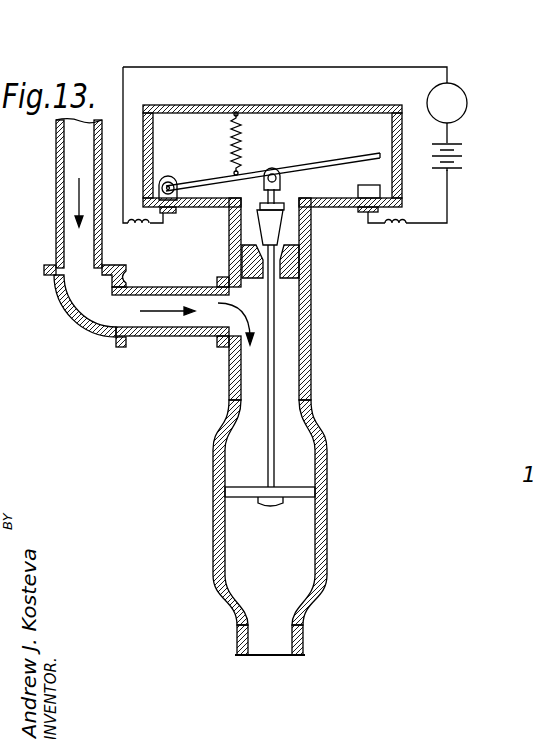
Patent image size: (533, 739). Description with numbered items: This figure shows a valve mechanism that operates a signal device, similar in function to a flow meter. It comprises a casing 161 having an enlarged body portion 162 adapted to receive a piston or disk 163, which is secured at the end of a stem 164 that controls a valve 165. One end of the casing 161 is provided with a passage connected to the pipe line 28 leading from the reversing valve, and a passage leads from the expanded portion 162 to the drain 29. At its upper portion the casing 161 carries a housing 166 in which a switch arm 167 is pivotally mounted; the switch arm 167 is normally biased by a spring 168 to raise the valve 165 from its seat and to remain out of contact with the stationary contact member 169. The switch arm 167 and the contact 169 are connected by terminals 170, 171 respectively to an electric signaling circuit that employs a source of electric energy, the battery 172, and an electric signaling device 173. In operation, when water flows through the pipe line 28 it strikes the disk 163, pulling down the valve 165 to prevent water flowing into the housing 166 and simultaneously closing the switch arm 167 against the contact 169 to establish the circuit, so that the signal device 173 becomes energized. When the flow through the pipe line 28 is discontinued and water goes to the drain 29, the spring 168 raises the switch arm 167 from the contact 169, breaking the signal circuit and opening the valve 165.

The pipe line 28 is at (58, 186).
The drain 29 is at (300, 635).
The casing 161 is at (308, 304).
The enlarged body portion 162 is at (327, 447).
The piston or disk 163 is at (303, 495).
The stem 164 is at (268, 350).
The valve 165 is at (276, 228).
The housing 166 is at (406, 108).
The switch arm 167 is at (348, 152).
The spring 168 is at (239, 151).
The stationary contact member 169 is at (378, 195).
The terminal 170 is at (143, 226).
The terminal 171 is at (406, 229).
The battery 172 is at (460, 170).
The electric signaling device 173 is at (461, 103).